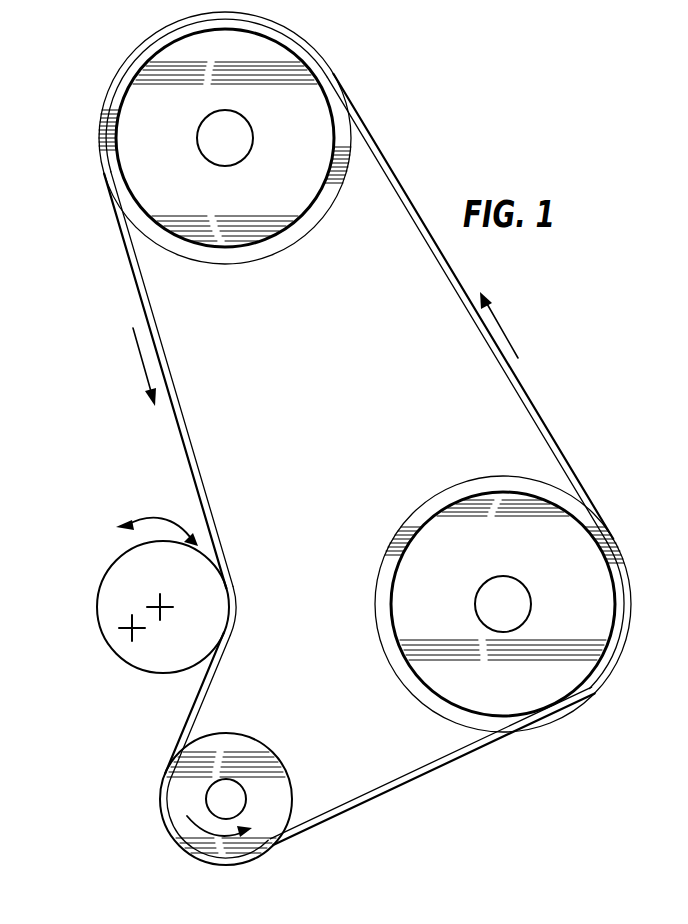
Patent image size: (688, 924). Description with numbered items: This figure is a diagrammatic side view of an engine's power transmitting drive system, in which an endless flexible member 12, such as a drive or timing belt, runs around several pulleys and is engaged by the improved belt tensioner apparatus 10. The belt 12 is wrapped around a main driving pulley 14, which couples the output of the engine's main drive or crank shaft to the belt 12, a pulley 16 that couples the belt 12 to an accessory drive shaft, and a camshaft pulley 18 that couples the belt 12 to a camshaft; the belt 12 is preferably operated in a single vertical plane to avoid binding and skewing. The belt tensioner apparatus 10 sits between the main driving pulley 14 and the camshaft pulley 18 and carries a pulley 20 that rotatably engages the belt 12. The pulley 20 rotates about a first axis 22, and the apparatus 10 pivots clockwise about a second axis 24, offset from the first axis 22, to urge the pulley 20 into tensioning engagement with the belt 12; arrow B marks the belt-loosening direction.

The belt tensioner apparatus 10 is at (108, 680).
The endless flexible member 12 is at (167, 377).
The main driving pulley 14 is at (257, 764).
The pulley 16 is at (435, 548).
The camshaft pulley 18 is at (313, 84).
The pulley 20 is at (206, 594).
The first axis 22 is at (158, 598).
The second axis 24 is at (138, 631).